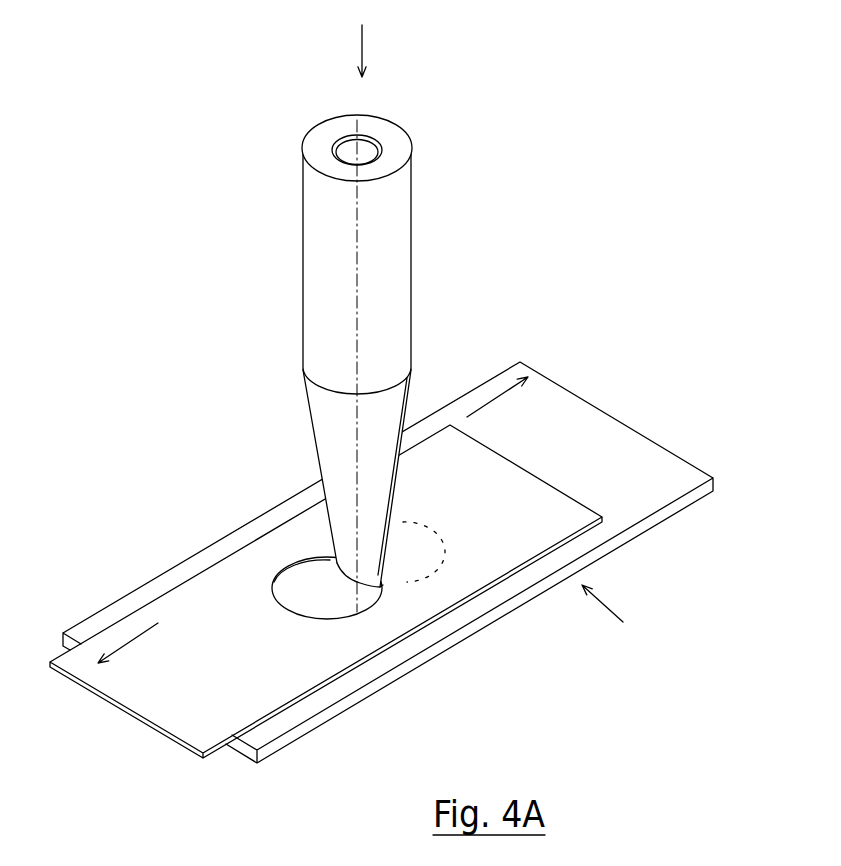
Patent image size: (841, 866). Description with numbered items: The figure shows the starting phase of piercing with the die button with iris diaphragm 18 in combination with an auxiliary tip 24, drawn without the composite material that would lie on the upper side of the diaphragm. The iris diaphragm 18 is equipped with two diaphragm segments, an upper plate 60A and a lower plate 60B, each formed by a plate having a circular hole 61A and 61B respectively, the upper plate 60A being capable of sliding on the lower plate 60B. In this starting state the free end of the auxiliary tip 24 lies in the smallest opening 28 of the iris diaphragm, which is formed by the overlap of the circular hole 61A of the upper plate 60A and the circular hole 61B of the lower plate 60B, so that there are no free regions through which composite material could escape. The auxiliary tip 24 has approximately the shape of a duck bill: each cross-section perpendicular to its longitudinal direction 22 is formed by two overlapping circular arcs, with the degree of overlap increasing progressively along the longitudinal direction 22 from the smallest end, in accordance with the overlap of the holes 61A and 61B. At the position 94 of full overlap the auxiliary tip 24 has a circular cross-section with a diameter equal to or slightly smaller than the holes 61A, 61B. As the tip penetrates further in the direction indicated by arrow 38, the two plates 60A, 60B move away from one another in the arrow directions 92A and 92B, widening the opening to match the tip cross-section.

The die button with iris diaphragm 18 is at (619, 612).
The longitudinal direction 22 is at (380, 143).
The auxiliary tip 24 is at (397, 507).
The smallest opening 28 is at (352, 580).
The insertion direction 38 is at (363, 38).
The upper plate 60A is at (157, 698).
The lower plate 60B is at (640, 462).
The circular hole 61A is at (272, 598).
The circular hole 61B is at (438, 558).
The arrow direction 92A is at (143, 628).
The arrow direction 92B is at (505, 387).
The position of full overlap 94 is at (408, 380).